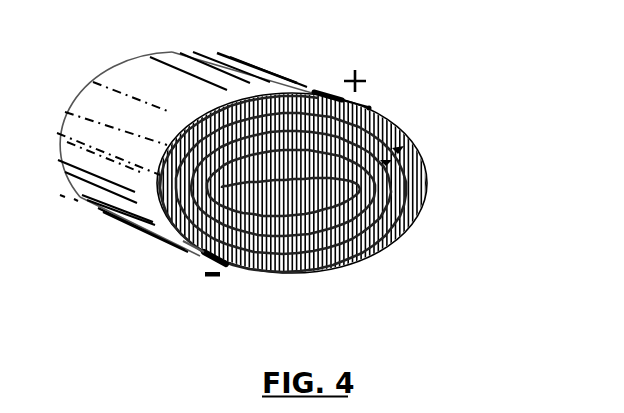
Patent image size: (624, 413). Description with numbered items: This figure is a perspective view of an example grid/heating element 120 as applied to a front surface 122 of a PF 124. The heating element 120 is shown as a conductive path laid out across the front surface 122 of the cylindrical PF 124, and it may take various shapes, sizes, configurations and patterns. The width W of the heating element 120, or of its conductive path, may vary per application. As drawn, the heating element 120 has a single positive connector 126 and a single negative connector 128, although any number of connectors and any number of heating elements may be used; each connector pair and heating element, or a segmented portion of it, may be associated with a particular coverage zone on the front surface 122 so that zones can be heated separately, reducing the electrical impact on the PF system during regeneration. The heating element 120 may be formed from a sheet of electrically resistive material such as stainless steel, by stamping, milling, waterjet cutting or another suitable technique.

The grid/heating element 120 is at (283, 260).
The front surface 122 is at (377, 253).
The PF 124 is at (153, 80).
The positive connector 126 is at (313, 87).
The negative connector 128 is at (212, 260).
The width W is at (398, 154).